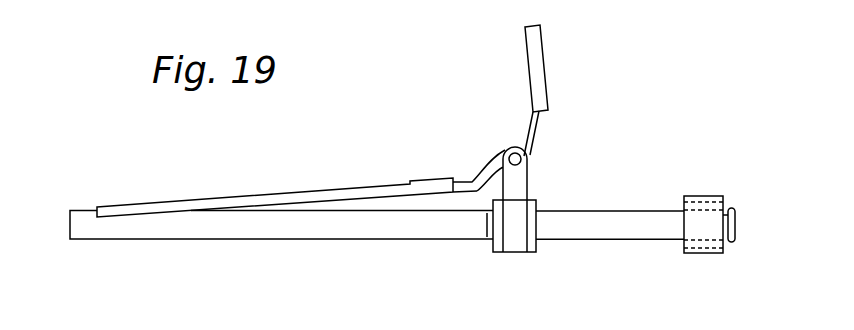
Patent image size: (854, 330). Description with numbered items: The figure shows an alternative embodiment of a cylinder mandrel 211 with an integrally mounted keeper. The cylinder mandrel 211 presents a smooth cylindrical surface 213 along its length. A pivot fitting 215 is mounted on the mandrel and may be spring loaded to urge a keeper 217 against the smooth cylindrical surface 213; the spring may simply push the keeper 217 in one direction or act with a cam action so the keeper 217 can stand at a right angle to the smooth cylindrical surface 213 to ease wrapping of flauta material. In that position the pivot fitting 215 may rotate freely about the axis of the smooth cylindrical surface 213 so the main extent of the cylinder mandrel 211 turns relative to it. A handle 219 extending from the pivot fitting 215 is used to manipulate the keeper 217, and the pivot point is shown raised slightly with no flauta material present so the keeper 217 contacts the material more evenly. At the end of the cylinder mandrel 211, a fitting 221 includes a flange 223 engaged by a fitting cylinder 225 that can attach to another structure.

The cylinder mandrel 211 is at (113, 180).
The smooth cylindrical surface 213 is at (251, 239).
The pivot fitting 215 is at (522, 185).
The keeper 217 is at (267, 194).
The handle 219 is at (544, 48).
The fitting 221 is at (743, 190).
The flange 223 is at (733, 244).
The fitting cylinder 225 is at (697, 253).